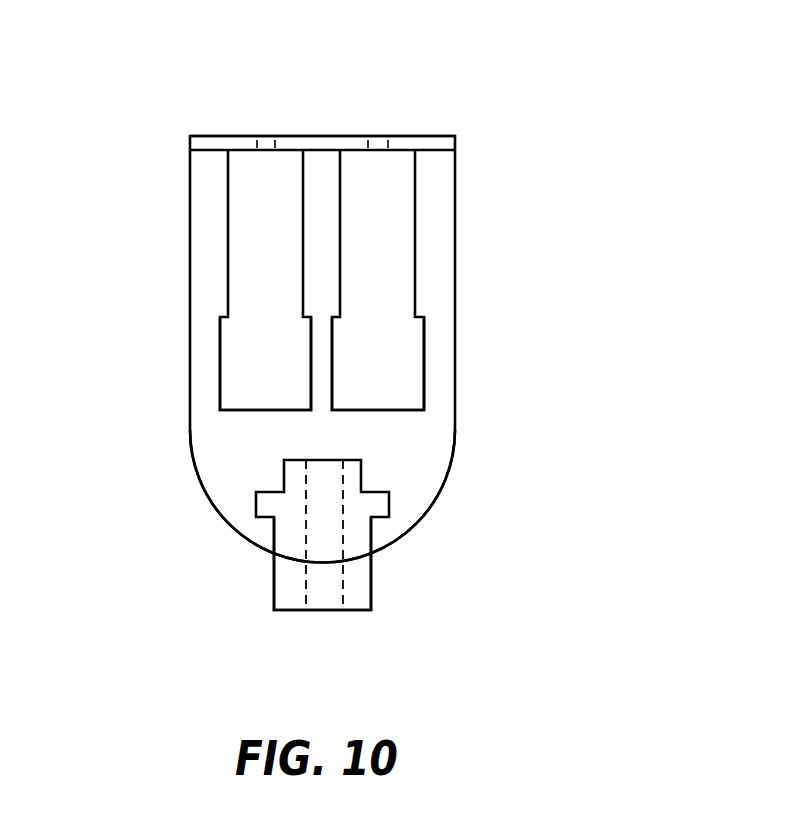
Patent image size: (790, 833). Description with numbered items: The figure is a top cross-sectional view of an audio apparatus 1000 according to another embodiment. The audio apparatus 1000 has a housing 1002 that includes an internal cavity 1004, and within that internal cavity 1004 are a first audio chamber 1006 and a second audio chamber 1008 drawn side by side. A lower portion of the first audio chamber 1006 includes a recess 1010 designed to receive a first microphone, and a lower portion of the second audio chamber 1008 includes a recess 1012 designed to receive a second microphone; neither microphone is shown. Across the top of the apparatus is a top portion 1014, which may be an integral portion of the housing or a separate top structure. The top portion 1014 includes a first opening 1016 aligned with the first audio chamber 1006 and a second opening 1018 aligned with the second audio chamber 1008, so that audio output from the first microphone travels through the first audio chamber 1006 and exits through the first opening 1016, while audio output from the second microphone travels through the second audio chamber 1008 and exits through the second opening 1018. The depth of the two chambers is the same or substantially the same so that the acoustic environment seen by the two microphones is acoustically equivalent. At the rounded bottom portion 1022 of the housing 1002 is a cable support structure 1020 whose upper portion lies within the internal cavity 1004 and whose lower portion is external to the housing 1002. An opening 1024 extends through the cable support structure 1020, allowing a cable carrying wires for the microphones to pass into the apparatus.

The audio apparatus 1000 is at (514, 90).
The housing 1002 is at (190, 290).
The internal cavity 1004 is at (430, 443).
The first audio chamber 1006 is at (292, 235).
The second audio chamber 1008 is at (404, 235).
The recess 1010 is at (230, 327).
The recess 1012 is at (410, 327).
The top portion 1014 is at (317, 136).
The first opening 1016 is at (265, 136).
The second opening 1018 is at (378, 136).
The cable support structure 1020 is at (372, 582).
The bottom portion 1022 is at (225, 527).
The opening 1024 is at (325, 597).